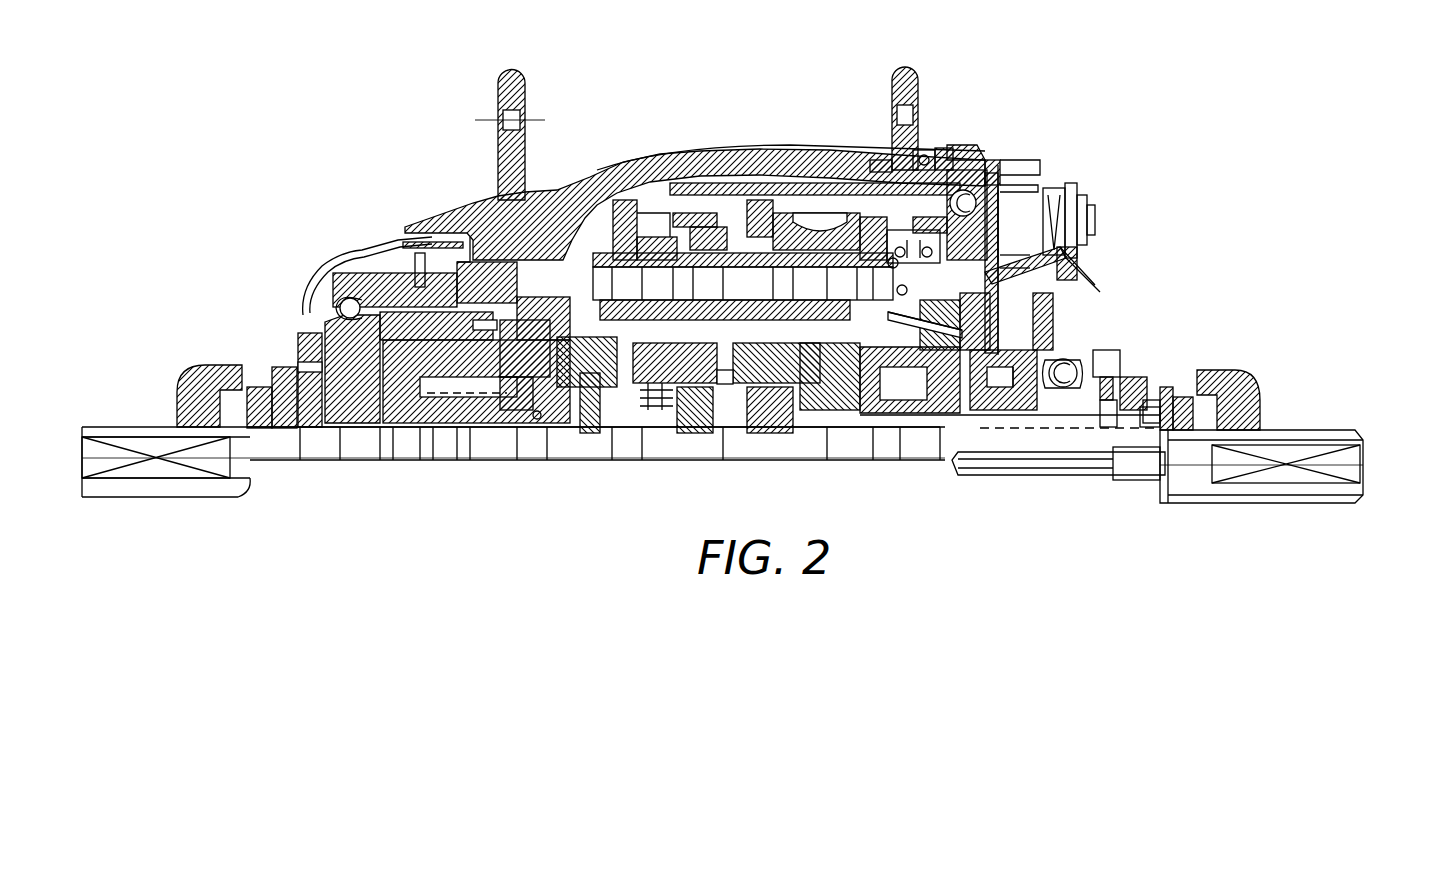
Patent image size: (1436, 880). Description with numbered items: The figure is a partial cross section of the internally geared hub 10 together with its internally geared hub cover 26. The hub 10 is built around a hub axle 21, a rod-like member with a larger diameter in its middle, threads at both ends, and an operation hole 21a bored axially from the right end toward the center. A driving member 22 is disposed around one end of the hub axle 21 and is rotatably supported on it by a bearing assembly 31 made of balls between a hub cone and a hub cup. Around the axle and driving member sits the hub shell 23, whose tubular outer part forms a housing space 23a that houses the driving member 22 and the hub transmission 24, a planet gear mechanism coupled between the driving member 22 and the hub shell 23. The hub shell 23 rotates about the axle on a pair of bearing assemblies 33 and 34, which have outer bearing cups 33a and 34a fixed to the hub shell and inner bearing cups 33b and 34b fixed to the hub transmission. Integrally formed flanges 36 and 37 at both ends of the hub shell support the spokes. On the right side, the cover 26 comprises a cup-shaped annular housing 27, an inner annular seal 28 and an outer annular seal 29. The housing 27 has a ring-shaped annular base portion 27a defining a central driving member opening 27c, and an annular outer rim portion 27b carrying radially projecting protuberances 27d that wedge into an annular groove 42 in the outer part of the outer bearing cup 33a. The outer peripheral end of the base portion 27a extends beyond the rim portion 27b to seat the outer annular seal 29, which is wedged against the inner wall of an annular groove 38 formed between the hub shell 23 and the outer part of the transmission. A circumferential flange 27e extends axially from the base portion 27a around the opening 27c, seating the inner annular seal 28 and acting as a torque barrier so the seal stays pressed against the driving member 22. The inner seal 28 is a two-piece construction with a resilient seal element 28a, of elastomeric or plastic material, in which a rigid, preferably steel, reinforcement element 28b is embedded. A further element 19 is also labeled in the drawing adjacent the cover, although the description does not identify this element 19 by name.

The internally geared hub 10 is at (1088, 92).
The motor 19 is at (1096, 207).
The hub axle 21 is at (1318, 487).
The operation hole 21a is at (1365, 448).
The driving member 22 is at (1030, 287).
The hub shell 23 is at (712, 152).
The housing space 23a is at (655, 205).
The hub transmission 24 is at (790, 215).
The internally geared hub cover 26 is at (1037, 153).
The annular housing 27 is at (984, 155).
The annular base portion 27a is at (1000, 192).
The annular outer rim portion 27b is at (992, 162).
The driving member opening 27c is at (1013, 257).
The radially projecting protuberance 27d is at (883, 162).
The circumferential flange 27e is at (1016, 266).
The inner annular seal 28 is at (1018, 279).
The resilient seal element 28a is at (985, 272).
The rigid reinforcement element 28b is at (1012, 352).
The outer annular seal 29 is at (994, 160).
The bearing assembly 31 is at (1068, 366).
The bearing assembly 33 is at (1026, 154).
The outer bearing cup 33a is at (866, 160).
The inner bearing cup 33b is at (1012, 172).
The bearing assembly 34 is at (345, 308).
The outer bearing cup 34a is at (350, 272).
The inner bearing cup 34b is at (297, 338).
The flange 36 is at (905, 68).
The flange 37 is at (512, 72).
The annular groove 38 is at (925, 150).
The annular groove 42 is at (945, 150).